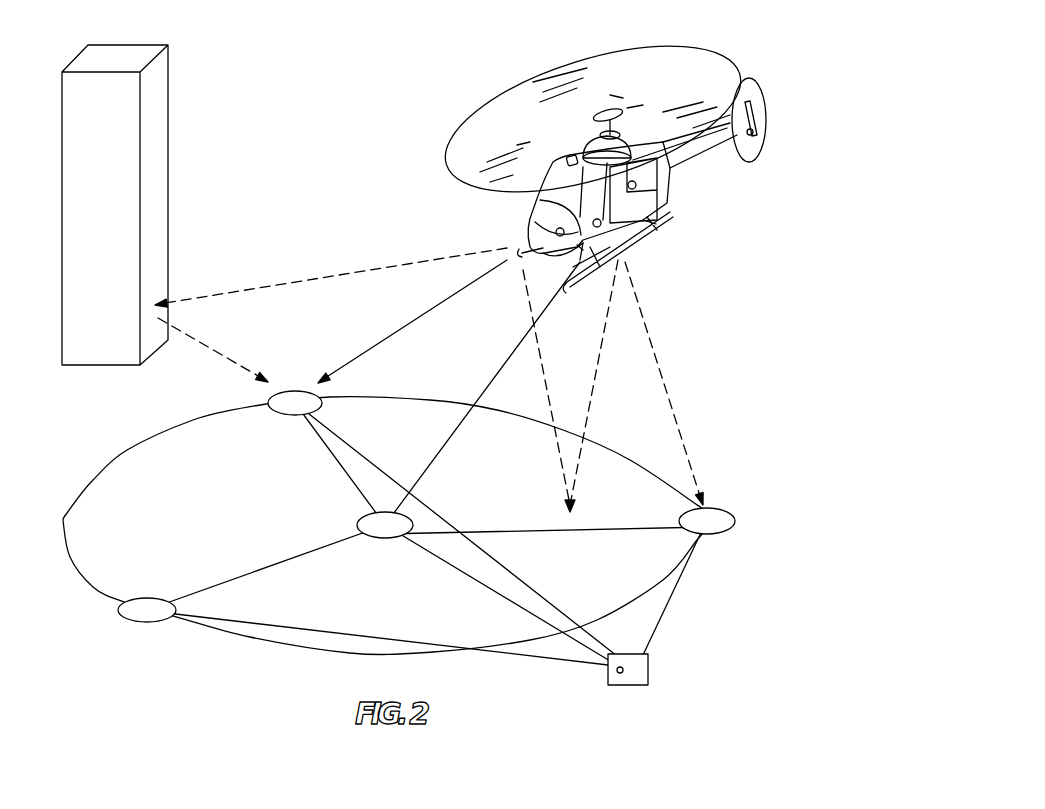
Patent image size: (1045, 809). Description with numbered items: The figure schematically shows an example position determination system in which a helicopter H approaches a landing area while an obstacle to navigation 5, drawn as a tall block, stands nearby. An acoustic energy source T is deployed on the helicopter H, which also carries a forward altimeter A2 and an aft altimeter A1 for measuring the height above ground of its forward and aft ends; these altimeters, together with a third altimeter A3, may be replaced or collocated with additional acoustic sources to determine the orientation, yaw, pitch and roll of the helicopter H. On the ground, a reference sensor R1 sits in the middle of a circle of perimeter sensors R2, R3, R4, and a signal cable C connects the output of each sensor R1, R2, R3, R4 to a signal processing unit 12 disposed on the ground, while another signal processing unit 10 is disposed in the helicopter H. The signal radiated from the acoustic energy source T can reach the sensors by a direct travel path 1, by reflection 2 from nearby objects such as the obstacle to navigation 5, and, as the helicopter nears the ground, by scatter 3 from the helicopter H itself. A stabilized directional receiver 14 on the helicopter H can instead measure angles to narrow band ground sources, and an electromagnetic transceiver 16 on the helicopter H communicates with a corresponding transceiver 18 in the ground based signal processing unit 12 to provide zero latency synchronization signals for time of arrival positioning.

The obstacle to navigation 5 is at (170, 165).
The direct travel path 1 is at (412, 321).
The reflection from nearby objects 2 is at (331, 308).
The scatter from the helicopter 3 is at (613, 386).
The reference sensor R1 is at (385, 512).
The perimeter sensor R2 is at (736, 520).
The perimeter sensor R3 is at (295, 391).
The perimeter sensor R4 is at (147, 598).
The signal cable C is at (327, 445).
The signal processing unit 12 is at (652, 667).
The transceiver 18 is at (620, 673).
The helicopter H is at (594, 156).
The aft altimeter A1 is at (707, 143).
The forward altimeter A2 is at (545, 218).
The altimeter A3 is at (628, 185).
The signal processing unit 10 is at (653, 222).
The stabilized directional receiver 14 is at (600, 226).
The electromagnetic transceiver 16 is at (556, 232).
The acoustic energy source T is at (580, 248).